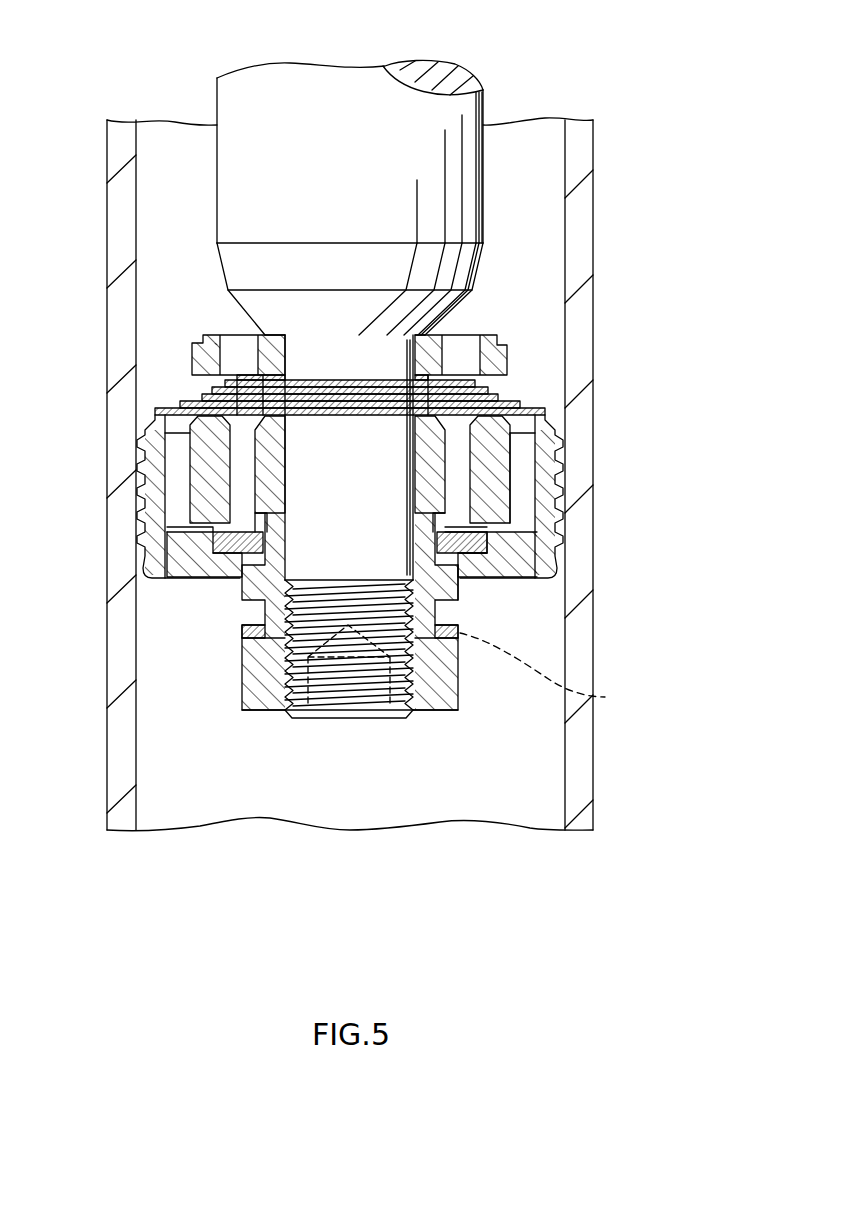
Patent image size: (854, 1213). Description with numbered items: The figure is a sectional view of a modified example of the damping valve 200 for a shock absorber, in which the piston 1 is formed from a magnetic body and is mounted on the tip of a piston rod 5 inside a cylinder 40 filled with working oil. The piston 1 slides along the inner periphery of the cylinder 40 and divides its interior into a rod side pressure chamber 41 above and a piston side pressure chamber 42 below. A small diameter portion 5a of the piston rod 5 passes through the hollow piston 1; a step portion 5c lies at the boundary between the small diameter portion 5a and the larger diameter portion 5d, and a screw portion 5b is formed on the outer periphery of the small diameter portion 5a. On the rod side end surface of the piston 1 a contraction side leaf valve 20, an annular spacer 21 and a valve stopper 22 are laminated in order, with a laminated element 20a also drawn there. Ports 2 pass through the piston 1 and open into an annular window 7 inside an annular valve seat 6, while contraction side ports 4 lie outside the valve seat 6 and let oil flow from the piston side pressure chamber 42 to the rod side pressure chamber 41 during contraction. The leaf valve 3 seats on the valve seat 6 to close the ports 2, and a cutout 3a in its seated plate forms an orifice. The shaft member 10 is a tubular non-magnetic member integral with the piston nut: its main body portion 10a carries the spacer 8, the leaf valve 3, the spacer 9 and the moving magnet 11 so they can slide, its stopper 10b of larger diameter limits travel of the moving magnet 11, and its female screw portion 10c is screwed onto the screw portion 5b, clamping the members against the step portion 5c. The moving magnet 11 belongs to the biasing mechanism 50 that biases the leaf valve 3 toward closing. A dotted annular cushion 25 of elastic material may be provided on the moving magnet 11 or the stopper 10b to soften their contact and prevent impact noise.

The piston 1 is at (557, 452).
The port 2 is at (242, 483).
The leaf valve 3 is at (200, 555).
The cutout 3a is at (222, 554).
The contraction side port 4 is at (182, 433).
The piston rod 5 is at (490, 94).
The small diameter portion 5a is at (312, 450).
The screw portion 5b is at (345, 700).
The step portion 5c is at (208, 340).
The shaft large-diameter portion 5d is at (265, 218).
The valve seat 6 is at (237, 533).
The annular window 7 is at (230, 517).
The spacer 8 is at (525, 477).
The spacer 9 is at (463, 600).
The shaft member 10 is at (262, 670).
The main body portion 10a is at (260, 622).
The stopper 10b is at (235, 692).
The female screw portion 10c is at (393, 700).
The moving magnet 11 is at (240, 590).
The contraction side leaf valve 20 is at (522, 398).
The gasket 20a is at (470, 377).
The spacer 21 is at (445, 365).
The valve stopper 22 is at (497, 353).
The cushion 25 is at (546, 670).
The cylinder 40 is at (580, 752).
The rod side pressure chamber 41 is at (165, 160).
The piston side pressure chamber 42 is at (180, 800).
The biasing mechanism 50 is at (460, 633).
The damping valve 200 is at (493, 555).